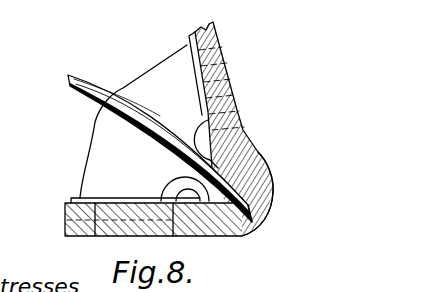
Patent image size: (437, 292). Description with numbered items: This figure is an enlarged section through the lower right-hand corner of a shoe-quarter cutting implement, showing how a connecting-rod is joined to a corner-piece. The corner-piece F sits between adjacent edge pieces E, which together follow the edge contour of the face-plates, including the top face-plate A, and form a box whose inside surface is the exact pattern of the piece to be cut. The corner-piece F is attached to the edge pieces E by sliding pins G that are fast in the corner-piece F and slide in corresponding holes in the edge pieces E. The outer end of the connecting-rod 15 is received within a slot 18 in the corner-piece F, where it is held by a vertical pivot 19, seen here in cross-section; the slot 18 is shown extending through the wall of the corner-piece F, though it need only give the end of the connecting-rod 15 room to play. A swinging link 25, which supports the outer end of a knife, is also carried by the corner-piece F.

The connecting-rod 15 is at (96, 86).
The slot 18 is at (259, 217).
The vertical pivot 19 is at (259, 231).
The swinging link 25 is at (200, 135).
The top face-plate A is at (115, 135).
The edge piece E is at (189, 32).
The corner-piece F is at (259, 165).
The sliding pin G is at (215, 84).